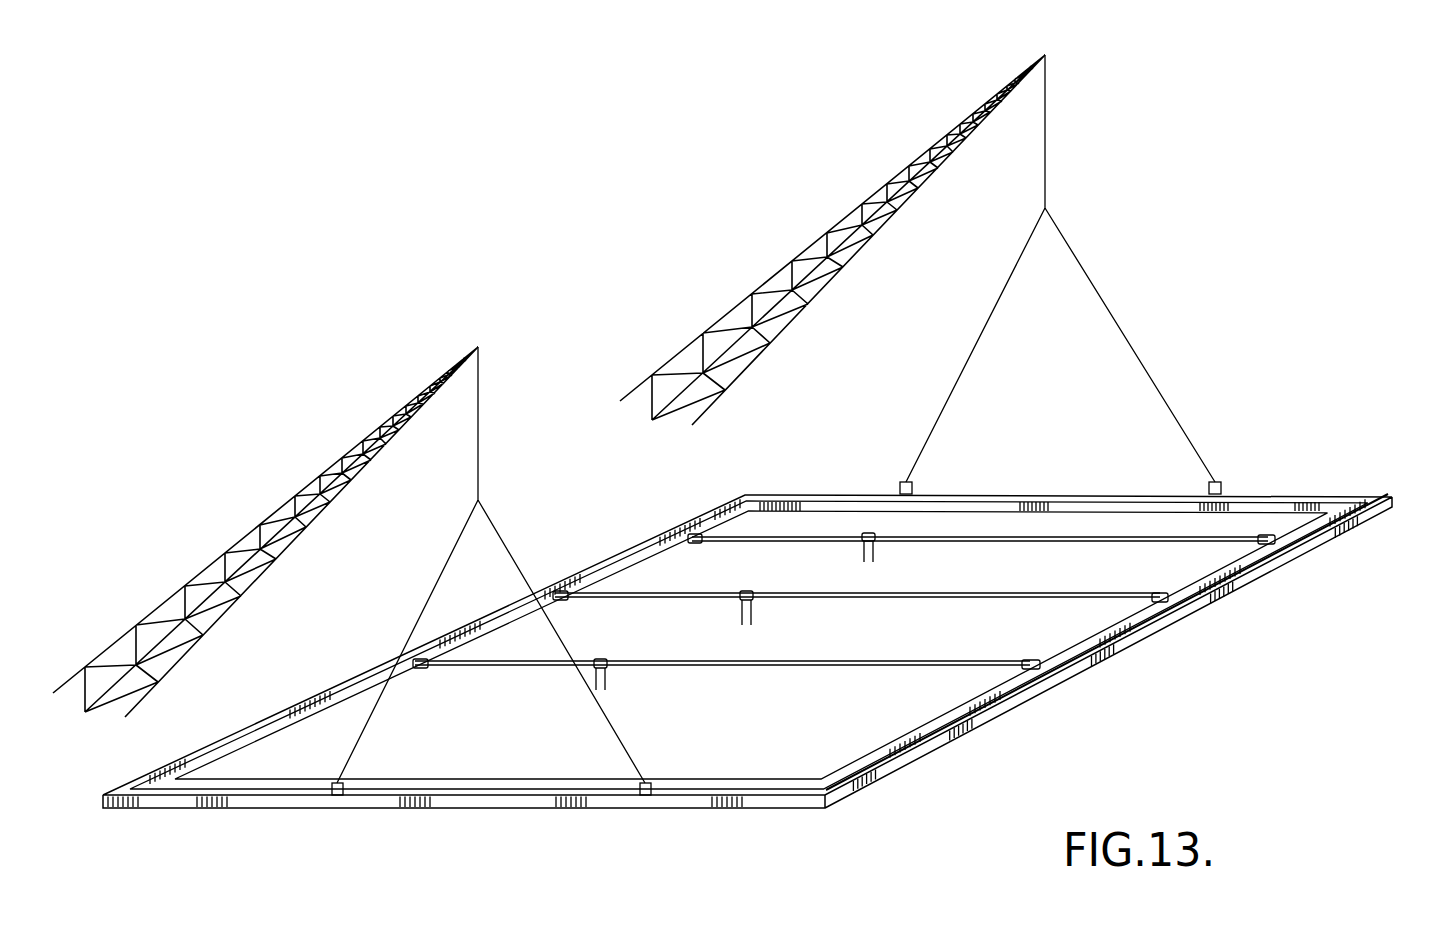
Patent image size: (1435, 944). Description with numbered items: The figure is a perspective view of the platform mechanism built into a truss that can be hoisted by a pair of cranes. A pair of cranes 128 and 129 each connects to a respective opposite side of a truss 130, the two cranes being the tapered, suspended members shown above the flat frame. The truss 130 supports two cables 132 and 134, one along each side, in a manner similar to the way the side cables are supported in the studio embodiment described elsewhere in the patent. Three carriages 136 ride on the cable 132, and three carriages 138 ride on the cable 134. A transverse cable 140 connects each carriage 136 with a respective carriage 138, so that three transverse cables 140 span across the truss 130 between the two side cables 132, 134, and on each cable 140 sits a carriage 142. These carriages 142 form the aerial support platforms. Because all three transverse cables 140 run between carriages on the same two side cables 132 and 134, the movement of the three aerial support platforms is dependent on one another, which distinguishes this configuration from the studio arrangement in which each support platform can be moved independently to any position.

The crane 128 is at (271, 512).
The crane 129 is at (848, 213).
The truss 130 is at (747, 643).
The cable 132 is at (627, 568).
The cable 134 is at (1077, 633).
The carriage 136 is at (690, 542).
The carriage 138 is at (1268, 536).
The transverse cable 140 is at (1055, 541).
The carriage 142 is at (866, 536).